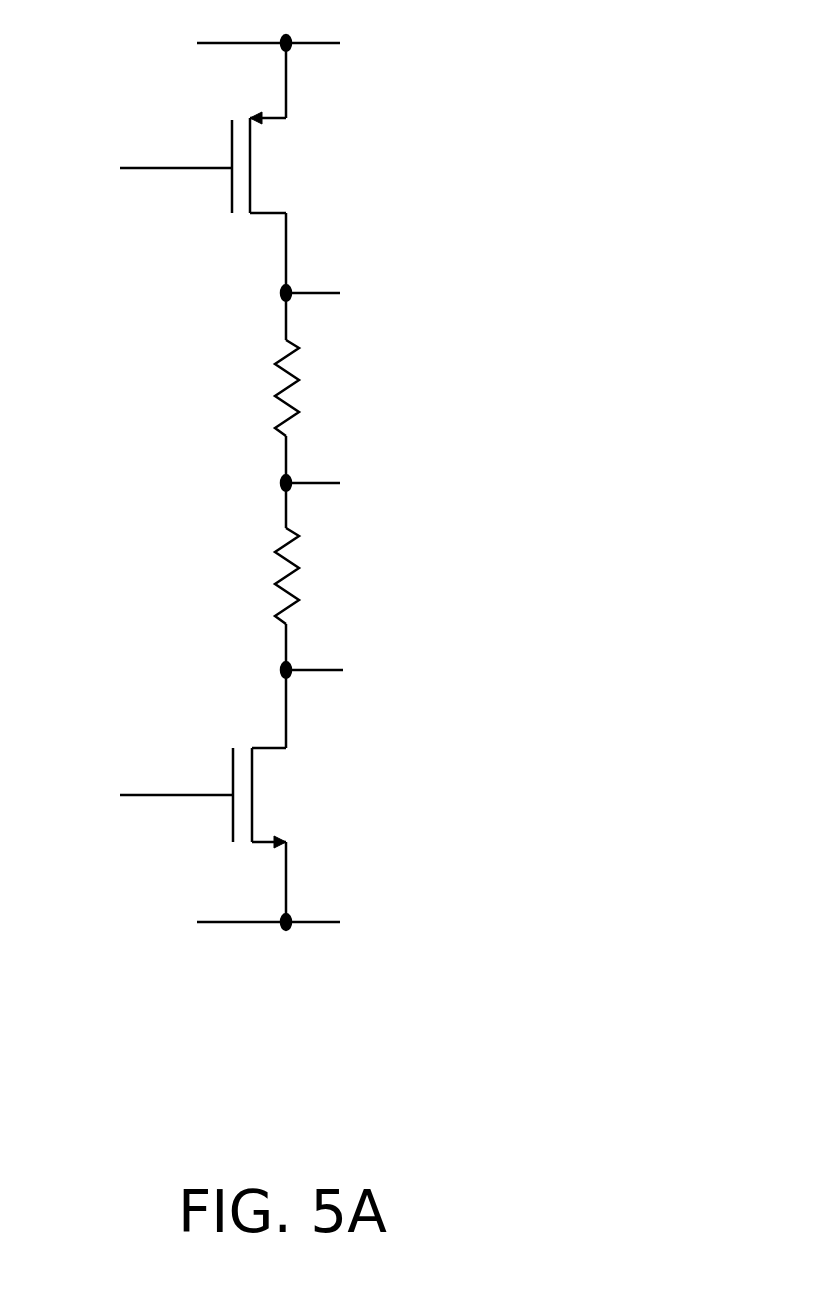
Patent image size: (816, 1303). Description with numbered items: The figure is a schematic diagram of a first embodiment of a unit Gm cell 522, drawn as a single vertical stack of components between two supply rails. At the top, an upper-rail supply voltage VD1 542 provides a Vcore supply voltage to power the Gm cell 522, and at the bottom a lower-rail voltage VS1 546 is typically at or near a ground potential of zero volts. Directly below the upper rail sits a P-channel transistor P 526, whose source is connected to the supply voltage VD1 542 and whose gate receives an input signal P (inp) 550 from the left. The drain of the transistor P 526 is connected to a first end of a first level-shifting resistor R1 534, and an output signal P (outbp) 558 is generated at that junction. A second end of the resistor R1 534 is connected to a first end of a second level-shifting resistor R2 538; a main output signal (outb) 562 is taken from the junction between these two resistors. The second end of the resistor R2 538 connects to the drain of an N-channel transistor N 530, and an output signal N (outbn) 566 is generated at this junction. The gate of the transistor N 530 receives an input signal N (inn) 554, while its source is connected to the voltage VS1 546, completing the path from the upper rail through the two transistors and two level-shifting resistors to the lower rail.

The unit Gm cell 522 is at (369, 589).
The P-channel transistor P 526 is at (250, 163).
The N-channel transistor N 530 is at (252, 800).
The first level-shifting resistor R1 534 is at (299, 380).
The second level-shifting resistor R2 538 is at (299, 568).
The upper-rail supply voltage VD1 542 is at (308, 45).
The lower-rail voltage VS1 546 is at (307, 925).
The input signal P (inp) 550 is at (163, 168).
The input signal N (inn) 554 is at (182, 800).
The output signal P (outbp) 558 is at (325, 294).
The main output signal (outb) 562 is at (330, 484).
The output signal N (outbn) 566 is at (332, 671).